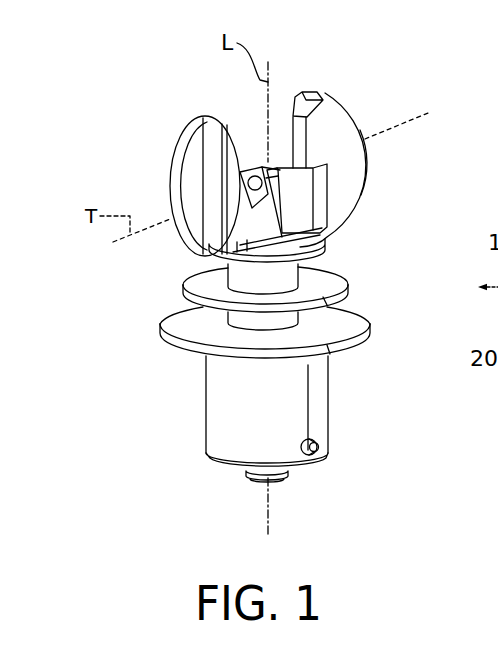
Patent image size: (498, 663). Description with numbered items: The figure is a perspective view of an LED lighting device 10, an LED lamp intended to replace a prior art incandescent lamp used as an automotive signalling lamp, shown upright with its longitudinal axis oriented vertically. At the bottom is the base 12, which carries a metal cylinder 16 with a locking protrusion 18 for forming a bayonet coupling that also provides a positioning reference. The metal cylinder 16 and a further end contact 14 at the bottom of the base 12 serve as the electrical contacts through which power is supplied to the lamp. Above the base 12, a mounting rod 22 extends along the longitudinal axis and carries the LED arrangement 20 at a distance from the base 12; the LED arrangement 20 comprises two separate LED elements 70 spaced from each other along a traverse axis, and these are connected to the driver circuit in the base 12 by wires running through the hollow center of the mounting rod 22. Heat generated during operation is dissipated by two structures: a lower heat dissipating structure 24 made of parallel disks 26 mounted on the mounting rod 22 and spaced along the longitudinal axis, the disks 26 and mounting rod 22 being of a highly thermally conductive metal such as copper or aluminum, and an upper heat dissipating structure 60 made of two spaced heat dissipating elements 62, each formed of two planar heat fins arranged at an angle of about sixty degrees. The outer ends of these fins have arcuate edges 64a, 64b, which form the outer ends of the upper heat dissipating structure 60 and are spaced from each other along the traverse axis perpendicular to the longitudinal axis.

The LED lighting device 10 is at (95, 88).
The base 12 is at (183, 406).
The end contact 14 is at (253, 478).
The metal cylinder 16 is at (330, 410).
The locking protrusion 18 is at (330, 447).
The LED arrangement 20 is at (341, 140).
The mounting rod 22 is at (313, 272).
The lower heat dissipating structure 24 is at (395, 228).
The disks 26 is at (181, 285).
The upper heat dissipating structure 60 is at (388, 185).
The heat dissipating elements 62 is at (323, 97).
The arcuate edge 64a is at (363, 163).
The arcuate edge 64b is at (213, 190).
The LED elements 70 is at (278, 168).